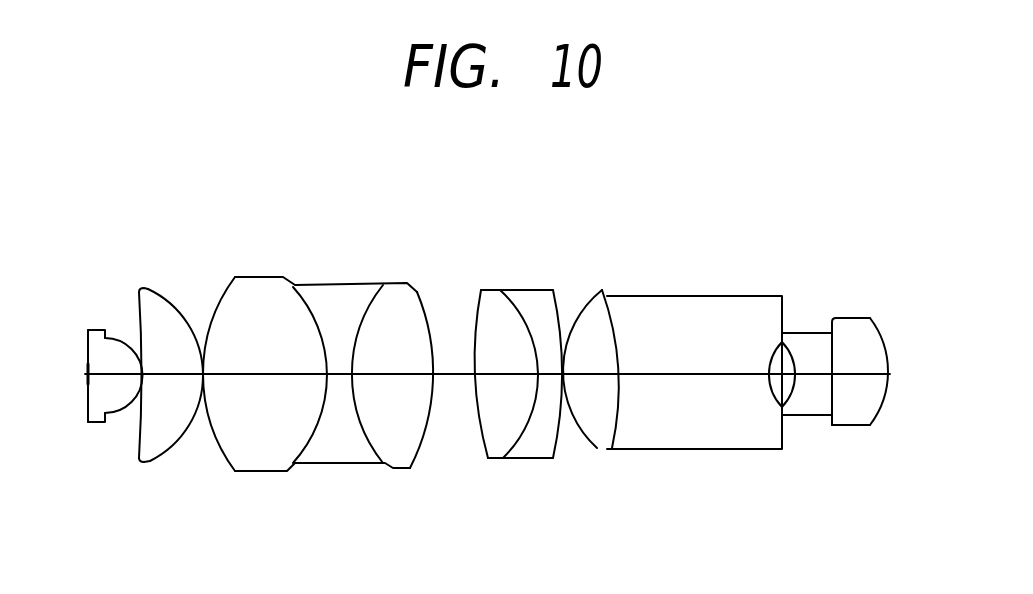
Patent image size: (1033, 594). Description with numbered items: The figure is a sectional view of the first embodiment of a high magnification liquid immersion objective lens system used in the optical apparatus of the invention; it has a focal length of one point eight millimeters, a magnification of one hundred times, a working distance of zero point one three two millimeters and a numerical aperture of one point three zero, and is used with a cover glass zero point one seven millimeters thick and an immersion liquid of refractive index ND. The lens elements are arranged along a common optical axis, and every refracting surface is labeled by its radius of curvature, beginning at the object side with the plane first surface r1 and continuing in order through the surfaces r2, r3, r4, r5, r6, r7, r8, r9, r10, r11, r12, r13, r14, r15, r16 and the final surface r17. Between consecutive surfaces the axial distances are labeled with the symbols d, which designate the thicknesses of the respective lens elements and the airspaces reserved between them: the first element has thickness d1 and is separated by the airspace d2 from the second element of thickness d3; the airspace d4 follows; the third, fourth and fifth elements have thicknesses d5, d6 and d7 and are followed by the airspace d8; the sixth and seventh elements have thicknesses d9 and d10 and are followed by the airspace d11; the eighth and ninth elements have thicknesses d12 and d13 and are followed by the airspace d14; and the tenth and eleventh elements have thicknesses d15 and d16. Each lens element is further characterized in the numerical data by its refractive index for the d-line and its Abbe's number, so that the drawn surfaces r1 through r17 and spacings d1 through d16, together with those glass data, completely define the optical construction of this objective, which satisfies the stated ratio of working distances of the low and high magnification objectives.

The radius of curvature r1 is at (87, 345).
The radius of curvature r2 is at (118, 343).
The radius of curvature r3 is at (139, 323).
The radius of curvature r4 is at (175, 305).
The radius of curvature r5 is at (218, 298).
The radius of curvature r6 is at (300, 305).
The radius of curvature r7 is at (363, 318).
The radius of curvature r8 is at (421, 302).
The radius of curvature r9 is at (479, 321).
The radius of curvature r10 is at (519, 307).
The radius of curvature r11 is at (557, 308).
The radius of curvature r12 is at (583, 308).
The radius of curvature r13 is at (615, 312).
The radius of curvature r14 is at (770, 353).
The radius of curvature r15 is at (789, 350).
The radius of curvature r16 is at (832, 337).
The radius of curvature r17 is at (878, 327).
The thickness d1 is at (100, 423).
The airspace d2 is at (138, 402).
The thickness d3 is at (163, 376).
The airspace d4 is at (198, 376).
The thickness d5 is at (255, 376).
The thickness d6 is at (338, 376).
The thickness d7 is at (395, 376).
The airspace d8 is at (447, 376).
The thickness d9 is at (502, 376).
The thickness d10 is at (537, 376).
The airspace d11 is at (565, 376).
The thickness d12 is at (597, 376).
The thickness d13 is at (687, 376).
The airspace d14 is at (781, 405).
The thickness d15 is at (812, 376).
The thickness d16 is at (860, 376).